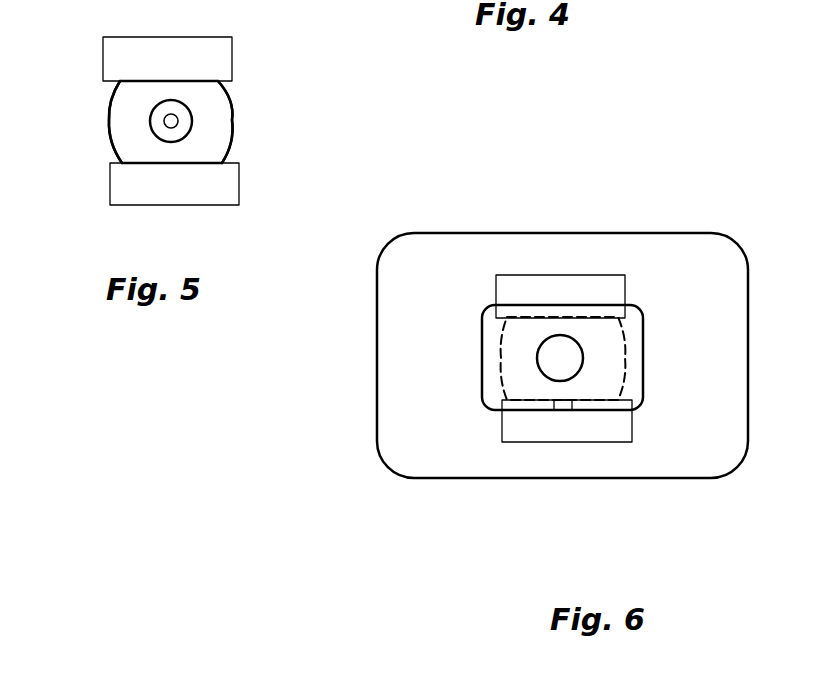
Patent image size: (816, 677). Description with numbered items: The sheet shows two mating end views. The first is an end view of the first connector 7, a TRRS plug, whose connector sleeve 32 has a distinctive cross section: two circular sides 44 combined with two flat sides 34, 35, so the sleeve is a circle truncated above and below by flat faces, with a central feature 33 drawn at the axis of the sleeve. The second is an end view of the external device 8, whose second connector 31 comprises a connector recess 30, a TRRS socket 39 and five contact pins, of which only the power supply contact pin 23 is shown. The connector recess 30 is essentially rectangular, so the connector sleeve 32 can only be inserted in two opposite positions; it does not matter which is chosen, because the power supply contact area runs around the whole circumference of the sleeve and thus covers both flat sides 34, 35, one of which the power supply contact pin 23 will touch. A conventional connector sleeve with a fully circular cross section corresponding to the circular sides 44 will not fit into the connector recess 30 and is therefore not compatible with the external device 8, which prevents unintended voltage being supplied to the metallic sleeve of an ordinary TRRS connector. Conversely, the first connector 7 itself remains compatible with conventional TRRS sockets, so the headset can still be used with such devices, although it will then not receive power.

In FIG. 5, the first connector 7 is at (100, 195).
In FIG. 6, the external device 8 is at (714, 317).
In FIG. 6, the power supply contact pin 23 is at (563, 410).
In FIG. 6, the connector recess 30 is at (640, 383).
In FIG. 6, the second connector 31 is at (562, 352).
In FIG. 5, the connector sleeve 32 is at (212, 110).
In FIG. 6, the connector sleeve 32 is at (599, 318).
In FIG. 5, the pin bore 33 is at (157, 117).
In FIG. 5, the flat side 34 is at (185, 80).
In FIG. 5, the flat side 35 is at (189, 163).
In FIG. 6, the TRRS socket 39 is at (543, 367).
In FIG. 5, the circular sides 44 is at (112, 147).